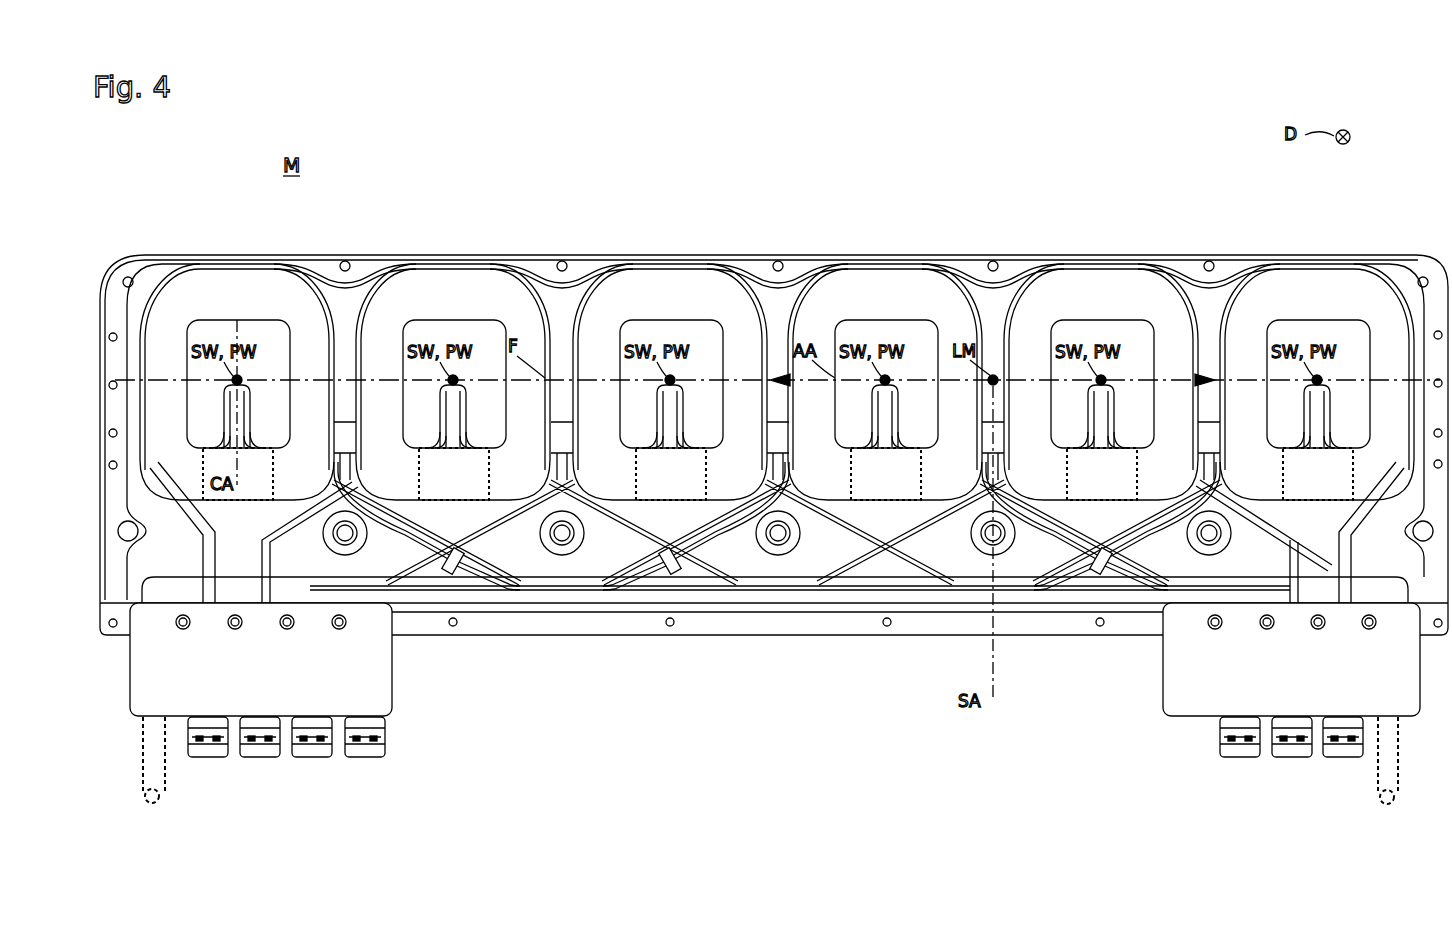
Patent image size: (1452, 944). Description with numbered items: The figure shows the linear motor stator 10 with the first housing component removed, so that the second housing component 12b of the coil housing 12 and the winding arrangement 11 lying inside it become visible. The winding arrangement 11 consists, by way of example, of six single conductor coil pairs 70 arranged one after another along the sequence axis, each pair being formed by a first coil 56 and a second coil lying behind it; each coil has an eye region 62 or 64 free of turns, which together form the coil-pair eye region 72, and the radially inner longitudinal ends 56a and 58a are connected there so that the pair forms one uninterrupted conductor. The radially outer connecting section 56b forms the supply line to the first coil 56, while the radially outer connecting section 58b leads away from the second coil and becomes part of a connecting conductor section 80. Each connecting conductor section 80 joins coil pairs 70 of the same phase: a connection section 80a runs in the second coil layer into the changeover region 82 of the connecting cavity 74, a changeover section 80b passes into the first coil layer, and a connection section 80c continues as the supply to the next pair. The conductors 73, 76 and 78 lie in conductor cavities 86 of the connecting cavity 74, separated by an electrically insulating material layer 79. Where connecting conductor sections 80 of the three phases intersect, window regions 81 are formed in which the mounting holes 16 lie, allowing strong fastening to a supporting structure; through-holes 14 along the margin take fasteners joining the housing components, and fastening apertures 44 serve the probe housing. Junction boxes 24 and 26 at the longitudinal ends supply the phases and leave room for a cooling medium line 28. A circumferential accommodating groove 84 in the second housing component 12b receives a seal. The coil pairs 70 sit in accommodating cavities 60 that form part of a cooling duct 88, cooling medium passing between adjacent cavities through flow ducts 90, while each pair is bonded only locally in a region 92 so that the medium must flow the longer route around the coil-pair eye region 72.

The linear motor stator 10 is at (441, 152).
The winding arrangement 11 is at (367, 226).
The coil housing 12 is at (603, 170).
The second housing component 12b is at (800, 260).
The through-holes 14 is at (348, 257).
The mounting holes 16 is at (566, 536).
The junction box 24 is at (372, 695).
The junction box 26 is at (1175, 695).
The cooling medium line 28 is at (166, 802).
The fastening apertures 44 is at (108, 432).
The first coil 56 is at (166, 270).
The radially inner longitudinal end 56a is at (1022, 402).
The radially outer connecting section 56b is at (356, 465).
The radially inner longitudinal end 58a is at (957, 402).
The radially outer connecting section 58b is at (336, 470).
The accommodating cavities 60 is at (234, 262).
The eye region 62 is at (1106, 330).
The eye region 64 is at (1320, 330).
The coil-pair eye region 72 is at (1235, 180).
The single conductor coil pair 70 is at (257, 290).
The electrical conductor 73 is at (211, 560).
The connecting cavity 74 is at (411, 603).
The electrical conductor 76 is at (872, 546).
The electrical conductor 78 is at (915, 562).
The electrically insulating material layer 79 is at (413, 528).
The connecting conductor section 80 is at (497, 587).
The connection section 80a is at (430, 542).
The changeover section 80b is at (559, 592).
The connection section 80c is at (722, 545).
The window regions 81 is at (527, 572).
The changeover region 82 is at (638, 602).
The accommodating groove 84 is at (803, 262).
The conductor cavities 86 is at (200, 530).
The cooling duct 88 is at (170, 262).
The flow ducts 90 is at (339, 440).
The region 92 is at (201, 472).